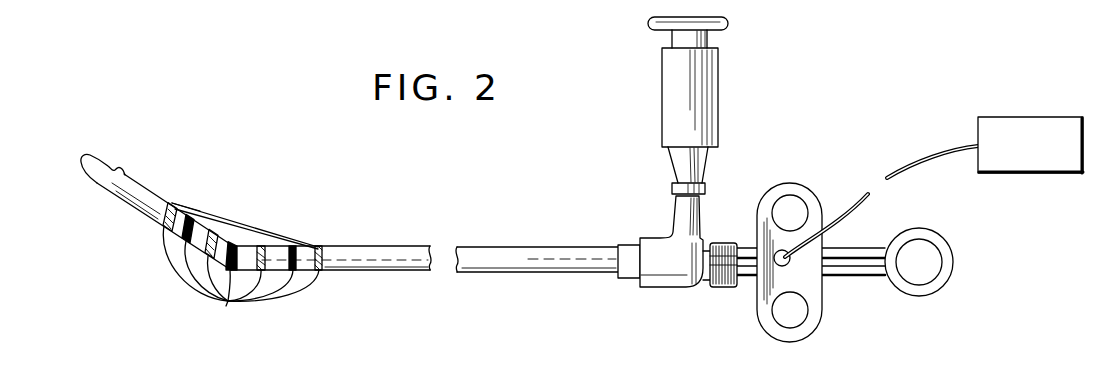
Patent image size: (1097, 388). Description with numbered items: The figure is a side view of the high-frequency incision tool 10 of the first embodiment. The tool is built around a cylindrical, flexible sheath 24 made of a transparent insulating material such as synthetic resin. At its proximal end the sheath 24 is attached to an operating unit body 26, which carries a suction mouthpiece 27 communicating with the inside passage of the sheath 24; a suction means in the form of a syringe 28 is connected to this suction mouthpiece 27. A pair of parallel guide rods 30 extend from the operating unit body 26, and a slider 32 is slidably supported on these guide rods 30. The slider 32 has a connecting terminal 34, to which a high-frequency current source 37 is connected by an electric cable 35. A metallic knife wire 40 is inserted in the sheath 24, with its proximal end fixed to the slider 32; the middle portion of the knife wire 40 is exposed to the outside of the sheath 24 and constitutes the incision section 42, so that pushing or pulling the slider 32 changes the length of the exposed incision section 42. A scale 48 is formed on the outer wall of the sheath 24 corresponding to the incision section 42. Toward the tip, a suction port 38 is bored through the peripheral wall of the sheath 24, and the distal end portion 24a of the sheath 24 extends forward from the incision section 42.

The incision tool 10 is at (503, 281).
The flexible sheath 24 is at (380, 247).
The distal end portion 24a is at (119, 198).
The operating unit body 26 is at (673, 236).
The suction mouthpiece 27 is at (707, 189).
The syringe 28 is at (718, 89).
The guide rods 30 is at (861, 278).
The slider 32 is at (814, 320).
The connecting terminal 34 is at (781, 267).
The electric cable 35 is at (918, 158).
The high-frequency current source 37 is at (1032, 117).
The suction port 38 is at (119, 170).
The knife wire 40 is at (253, 227).
The incision section 42 is at (213, 200).
The scale 48 is at (226, 306).